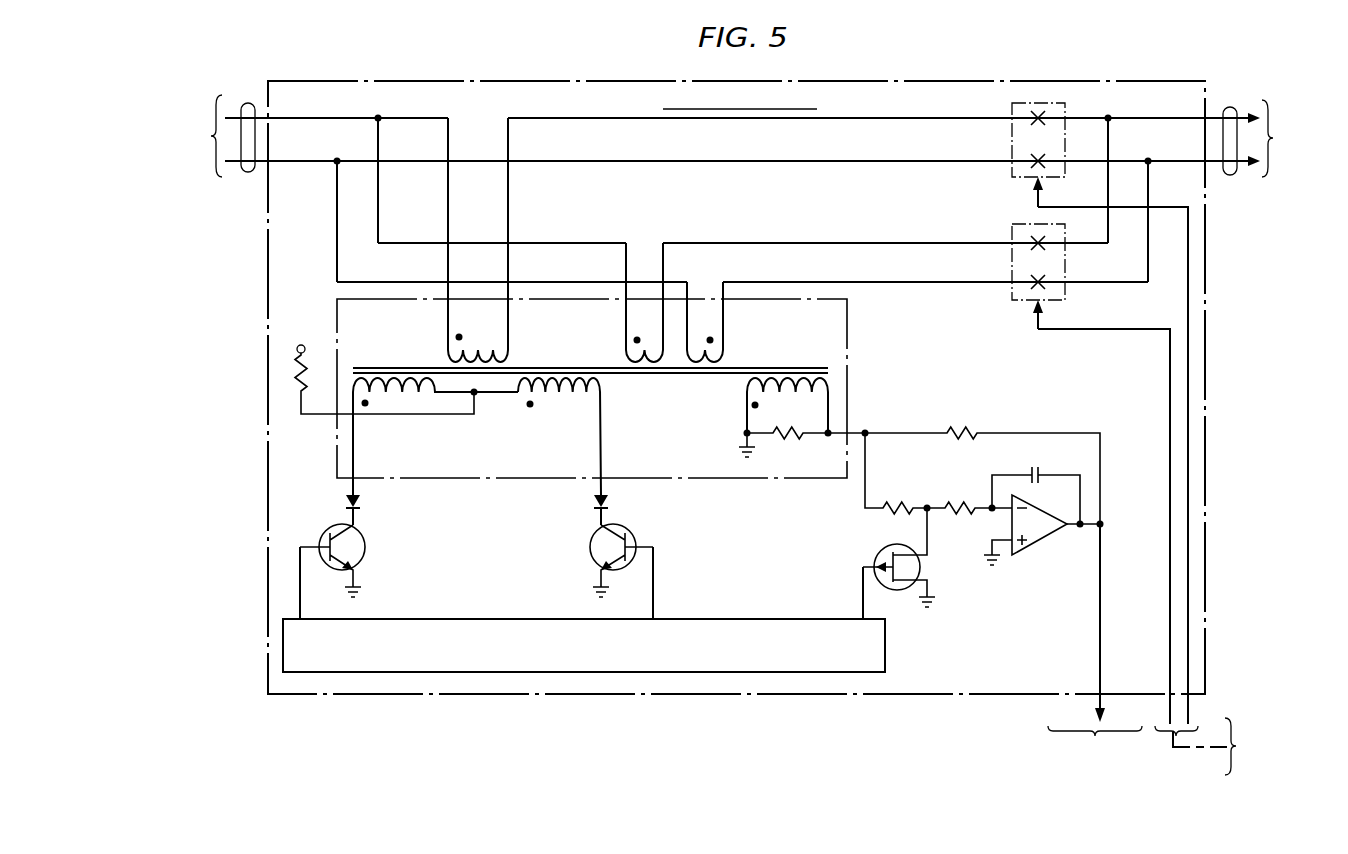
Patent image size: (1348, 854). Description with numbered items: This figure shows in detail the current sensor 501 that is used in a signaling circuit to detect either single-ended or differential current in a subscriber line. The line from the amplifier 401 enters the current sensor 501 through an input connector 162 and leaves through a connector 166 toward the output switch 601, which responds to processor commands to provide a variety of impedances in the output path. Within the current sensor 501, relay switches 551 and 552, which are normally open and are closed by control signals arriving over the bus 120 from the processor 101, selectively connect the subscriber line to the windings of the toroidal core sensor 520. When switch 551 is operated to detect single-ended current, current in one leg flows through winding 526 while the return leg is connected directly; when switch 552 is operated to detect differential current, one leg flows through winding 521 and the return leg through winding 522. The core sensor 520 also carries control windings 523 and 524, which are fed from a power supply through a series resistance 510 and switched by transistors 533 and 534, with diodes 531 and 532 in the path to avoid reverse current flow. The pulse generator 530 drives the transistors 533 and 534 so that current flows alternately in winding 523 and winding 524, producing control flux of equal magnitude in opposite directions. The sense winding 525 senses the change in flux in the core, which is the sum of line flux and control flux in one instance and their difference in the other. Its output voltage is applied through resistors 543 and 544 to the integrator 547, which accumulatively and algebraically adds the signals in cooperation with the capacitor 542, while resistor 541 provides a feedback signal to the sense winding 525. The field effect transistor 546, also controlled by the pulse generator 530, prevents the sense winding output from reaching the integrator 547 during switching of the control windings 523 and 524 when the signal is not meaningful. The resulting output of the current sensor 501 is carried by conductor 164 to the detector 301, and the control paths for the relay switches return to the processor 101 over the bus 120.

The input connector 162 is at (252, 92).
The amplifier 401 is at (198, 136).
The current sensor 501 is at (742, 81).
The relay switch 551 is at (1012, 104).
The relay switch 552 is at (1012, 225).
The output connector 166 is at (1230, 107).
The output switch 601 is at (1298, 138).
The winding 526 is at (448, 358).
The winding 521 is at (626, 358).
The winding 522 is at (724, 358).
The control winding 523 is at (398, 396).
The control winding 524 is at (603, 385).
The sense winding 525 is at (747, 385).
The series resistance 510 is at (298, 395).
The toroidal core sensor 520 is at (478, 478).
The diode 531 is at (362, 503).
The diode 532 is at (607, 503).
The transistor 533 is at (366, 547).
The transistor 534 is at (589, 547).
The pulse generator 530 is at (495, 595).
The resistor 541 is at (965, 426).
The capacitor 542 is at (1033, 467).
The resistor 543 is at (897, 501).
The resistor 544 is at (957, 501).
The field effect transistor 546 is at (880, 548).
The integrator 547 is at (1040, 535).
The conductor 164 is at (1096, 704).
The detector 301 is at (1095, 756).
The bus 120 is at (1207, 749).
The processor 101 is at (1279, 746).